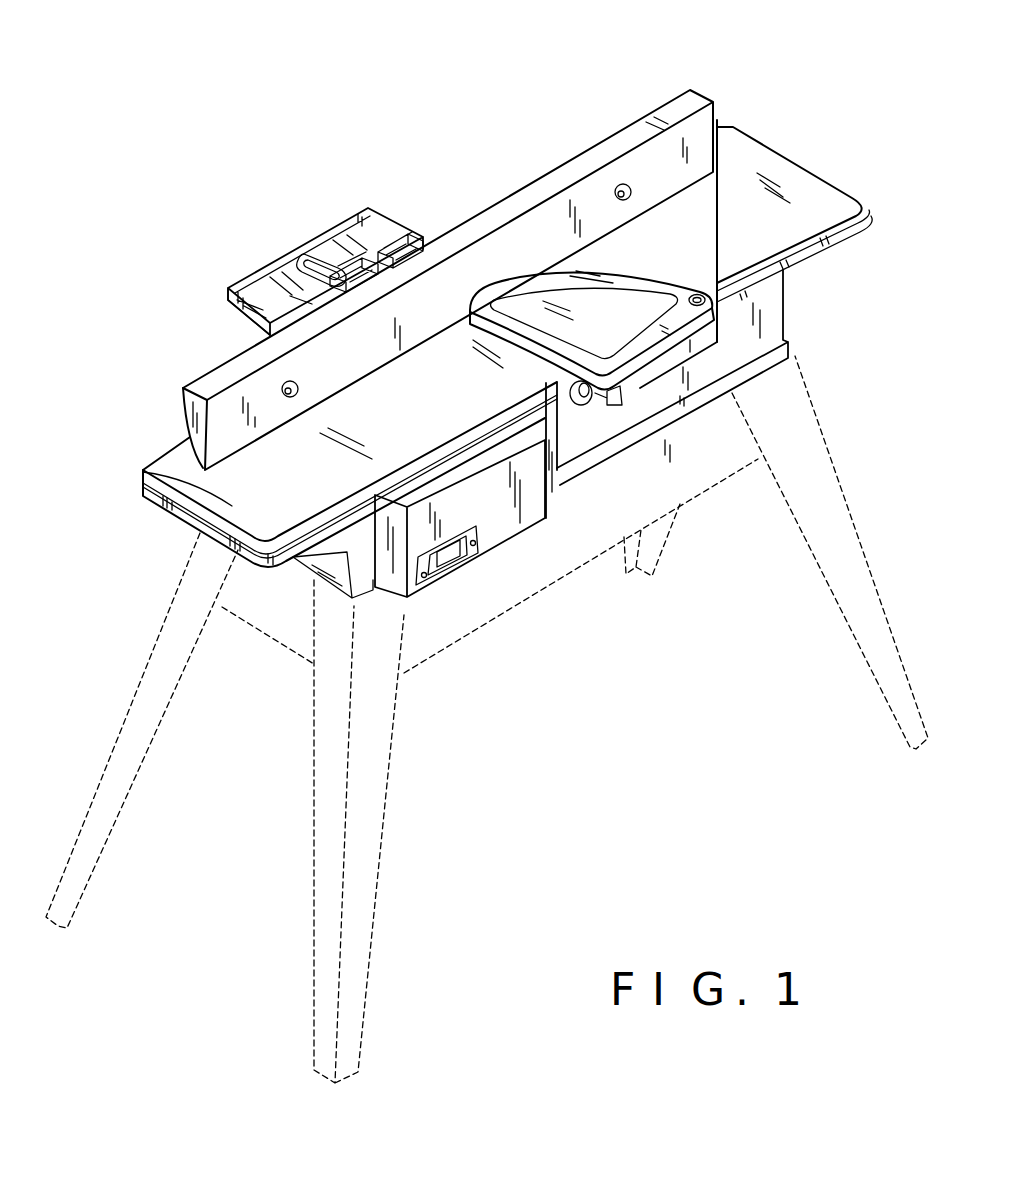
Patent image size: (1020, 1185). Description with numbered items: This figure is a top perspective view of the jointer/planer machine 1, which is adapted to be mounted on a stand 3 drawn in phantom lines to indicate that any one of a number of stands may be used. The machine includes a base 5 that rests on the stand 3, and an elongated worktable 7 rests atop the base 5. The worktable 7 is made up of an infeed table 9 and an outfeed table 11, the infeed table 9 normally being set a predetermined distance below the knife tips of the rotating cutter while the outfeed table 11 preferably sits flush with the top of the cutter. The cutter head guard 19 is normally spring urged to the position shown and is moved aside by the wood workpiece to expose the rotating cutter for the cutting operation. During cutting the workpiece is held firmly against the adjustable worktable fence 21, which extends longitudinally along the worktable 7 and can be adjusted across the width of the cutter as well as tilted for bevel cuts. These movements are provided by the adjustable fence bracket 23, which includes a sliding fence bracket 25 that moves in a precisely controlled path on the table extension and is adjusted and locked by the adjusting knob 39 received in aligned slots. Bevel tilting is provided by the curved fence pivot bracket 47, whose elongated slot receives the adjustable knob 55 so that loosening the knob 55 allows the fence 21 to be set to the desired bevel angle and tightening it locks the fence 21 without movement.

The jointer/planer machine 1 is at (583, 111).
The stand 3 is at (380, 746).
The base 5 is at (768, 317).
The elongated worktable 7 is at (764, 136).
The infeed table 9 is at (793, 202).
The outfeed table 11 is at (143, 470).
The cutter head guard 19 is at (575, 300).
The adjustable worktable fence 21 is at (626, 138).
The adjustable fence bracket 23 is at (283, 252).
The sliding fence bracket 25 is at (235, 306).
The adjusting knob 39 is at (342, 225).
The fence pivot bracket 47 is at (377, 237).
The adjustable knob 55 is at (413, 238).